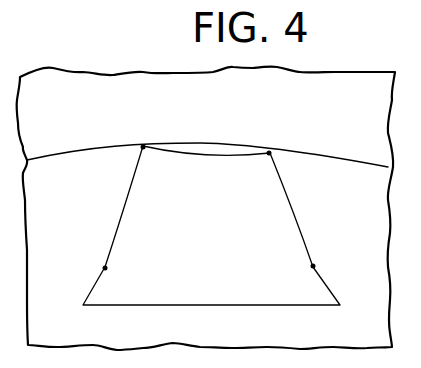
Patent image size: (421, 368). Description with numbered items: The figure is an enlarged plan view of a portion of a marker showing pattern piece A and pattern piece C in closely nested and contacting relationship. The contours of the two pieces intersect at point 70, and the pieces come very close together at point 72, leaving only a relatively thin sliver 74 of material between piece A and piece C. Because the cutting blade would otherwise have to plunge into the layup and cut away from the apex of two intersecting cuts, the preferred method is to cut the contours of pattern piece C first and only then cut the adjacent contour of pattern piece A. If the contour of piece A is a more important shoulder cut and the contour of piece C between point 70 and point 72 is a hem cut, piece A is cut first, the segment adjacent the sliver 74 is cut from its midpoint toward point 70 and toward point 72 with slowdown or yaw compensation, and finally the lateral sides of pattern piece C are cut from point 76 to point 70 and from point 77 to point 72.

The point of intersection of contours 70 is at (143, 147).
The point of closeness of pieces 72 is at (269, 153).
The sliver 74 is at (228, 148).
The point on lateral side of pattern piece C 76 is at (105, 268).
The point on lateral side of pattern piece C 77 is at (313, 266).
The pattern piece A is at (213, 113).
The pattern piece C is at (213, 247).